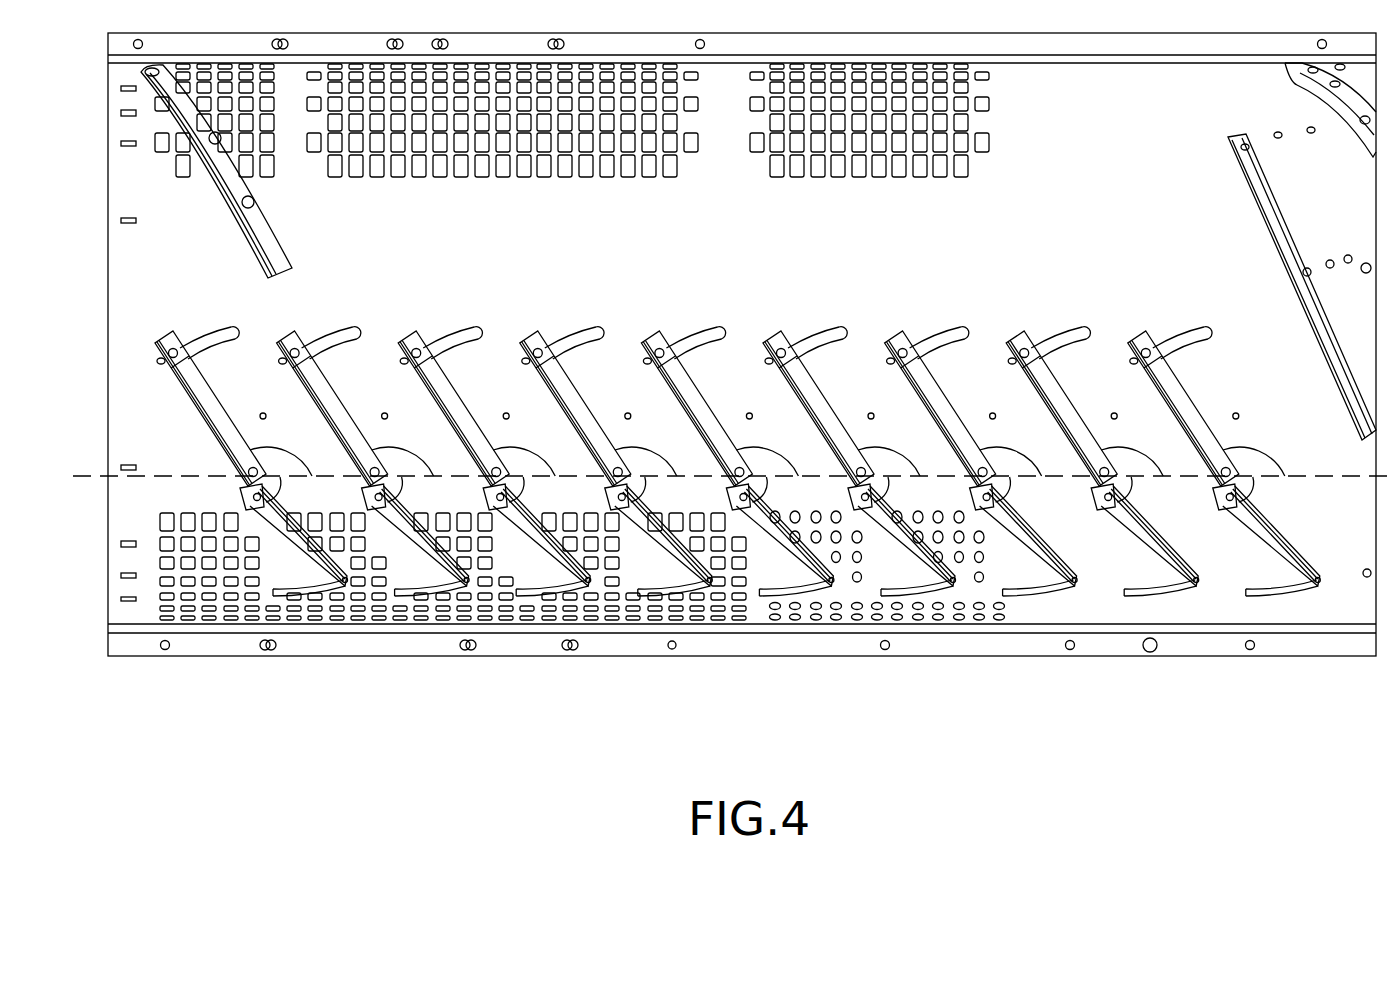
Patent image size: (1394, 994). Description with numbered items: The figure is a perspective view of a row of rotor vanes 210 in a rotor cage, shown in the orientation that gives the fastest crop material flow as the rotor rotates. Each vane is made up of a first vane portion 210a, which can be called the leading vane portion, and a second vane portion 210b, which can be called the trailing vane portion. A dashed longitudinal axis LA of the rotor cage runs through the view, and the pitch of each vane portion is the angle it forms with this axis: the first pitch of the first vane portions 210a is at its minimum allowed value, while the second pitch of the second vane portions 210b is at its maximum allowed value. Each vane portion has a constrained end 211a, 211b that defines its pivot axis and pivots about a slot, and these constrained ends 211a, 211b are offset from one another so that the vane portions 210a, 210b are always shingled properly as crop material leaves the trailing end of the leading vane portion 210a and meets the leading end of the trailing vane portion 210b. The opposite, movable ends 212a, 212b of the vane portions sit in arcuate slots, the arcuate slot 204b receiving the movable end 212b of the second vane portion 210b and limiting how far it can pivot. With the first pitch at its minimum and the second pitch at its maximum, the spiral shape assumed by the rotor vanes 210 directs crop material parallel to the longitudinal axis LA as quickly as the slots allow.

The rotor vanes 210 is at (724, 485).
The first vane portion 210a is at (782, 596).
The second vane portion 210b is at (697, 408).
The constrained end of first vane portion 211a is at (717, 609).
The constrained end of second vane portion 211b is at (721, 423).
The movable end of first vane portion 212a is at (796, 636).
The movable end of second vane portion 212b is at (289, 341).
The arcuate slot 204b is at (696, 315).
The longitudinal axis LA is at (85, 473).